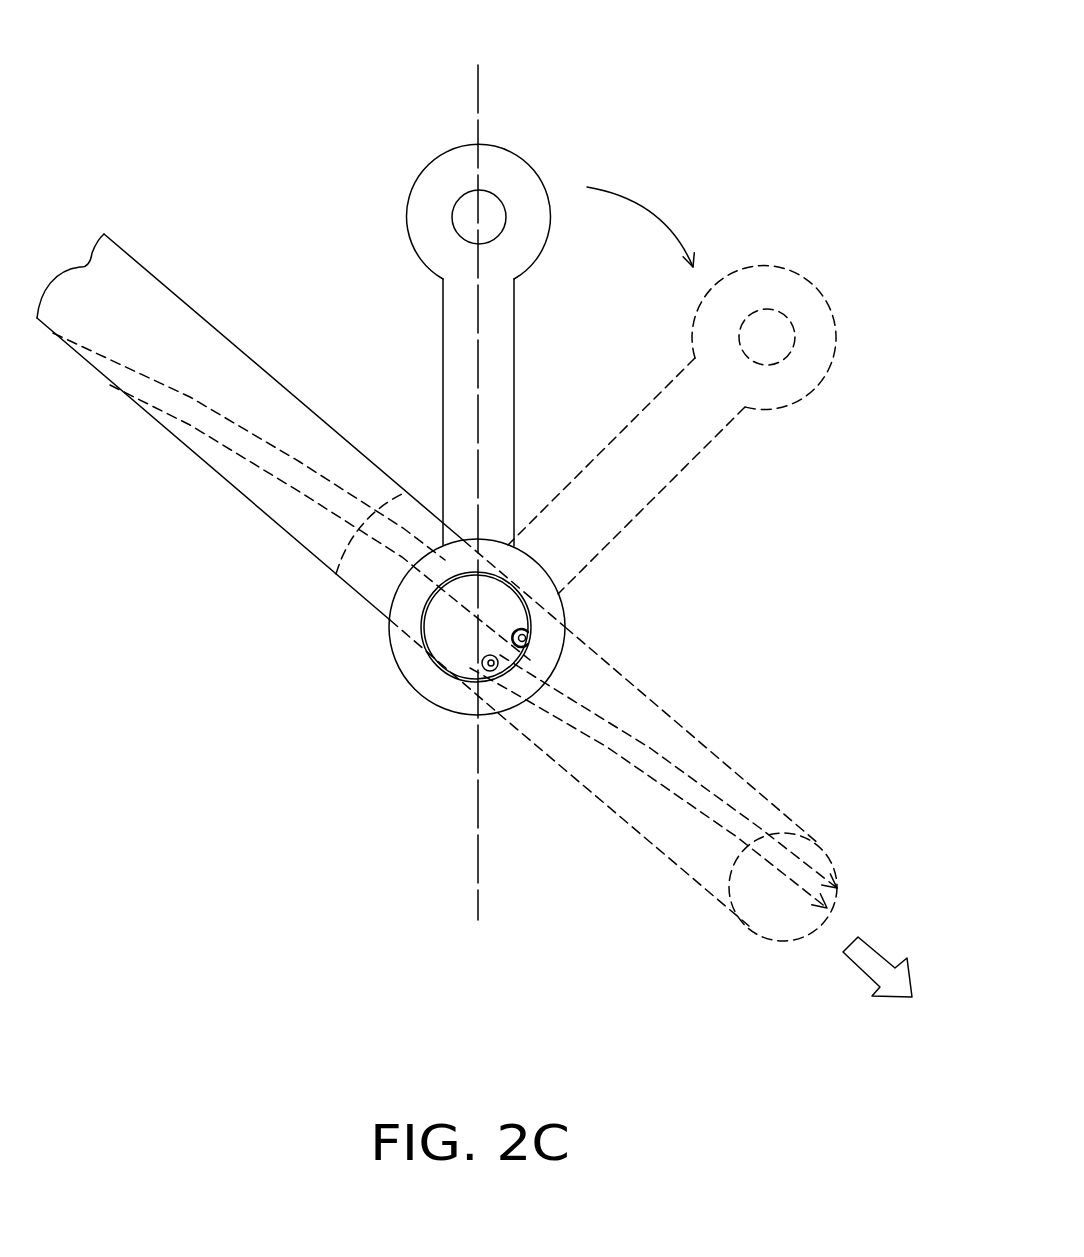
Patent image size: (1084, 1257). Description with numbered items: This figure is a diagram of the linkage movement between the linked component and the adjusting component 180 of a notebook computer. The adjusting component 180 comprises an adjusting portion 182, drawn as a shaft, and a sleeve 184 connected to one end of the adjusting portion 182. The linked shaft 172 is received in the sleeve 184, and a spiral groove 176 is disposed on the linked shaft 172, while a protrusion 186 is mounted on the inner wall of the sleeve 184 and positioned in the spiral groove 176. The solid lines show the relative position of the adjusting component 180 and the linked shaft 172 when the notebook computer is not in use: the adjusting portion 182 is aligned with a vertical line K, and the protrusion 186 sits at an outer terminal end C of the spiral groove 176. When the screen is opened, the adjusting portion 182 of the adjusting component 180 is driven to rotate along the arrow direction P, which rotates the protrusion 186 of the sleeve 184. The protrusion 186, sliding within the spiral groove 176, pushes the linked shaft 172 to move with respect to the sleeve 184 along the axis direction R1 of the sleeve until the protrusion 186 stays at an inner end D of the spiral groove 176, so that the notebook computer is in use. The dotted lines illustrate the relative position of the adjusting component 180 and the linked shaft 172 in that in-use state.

The linked shaft 172 is at (174, 312).
The spiral groove 176 is at (265, 458).
The adjusting component 180 is at (527, 155).
The adjusting portion 182 is at (440, 323).
The sleeve 184 is at (470, 543).
The protrusion 186 is at (533, 642).
The vertical line K is at (480, 469).
The arrow direction P is at (640, 213).
The inner end of the spiral groove D is at (162, 400).
The outer terminal end of the spiral groove C is at (530, 618).
The axis direction of the sleeve R1 is at (901, 984).